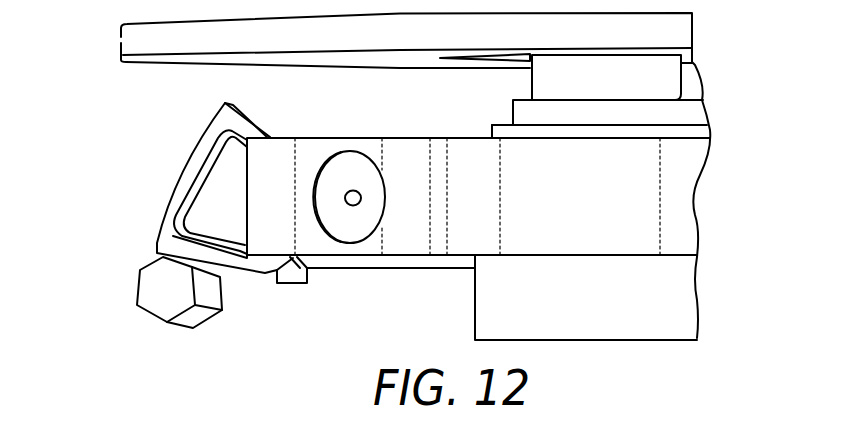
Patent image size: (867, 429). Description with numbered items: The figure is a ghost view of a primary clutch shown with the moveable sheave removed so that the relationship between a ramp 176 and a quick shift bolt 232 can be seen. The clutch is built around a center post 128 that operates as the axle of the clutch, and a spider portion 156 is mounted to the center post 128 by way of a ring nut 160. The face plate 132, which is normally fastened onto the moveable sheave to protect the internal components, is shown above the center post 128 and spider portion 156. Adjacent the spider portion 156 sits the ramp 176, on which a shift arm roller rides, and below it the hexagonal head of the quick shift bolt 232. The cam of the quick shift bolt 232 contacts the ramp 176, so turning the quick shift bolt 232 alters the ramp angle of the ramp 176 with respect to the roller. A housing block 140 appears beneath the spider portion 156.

The face plate 132 is at (135, 38).
The center post 128 is at (663, 77).
The ring nut 160 is at (687, 108).
The spider portion 156 is at (633, 198).
The lower housing block 140 is at (677, 290).
The ramp 176 is at (183, 158).
The quick shift bolt 232 is at (155, 290).